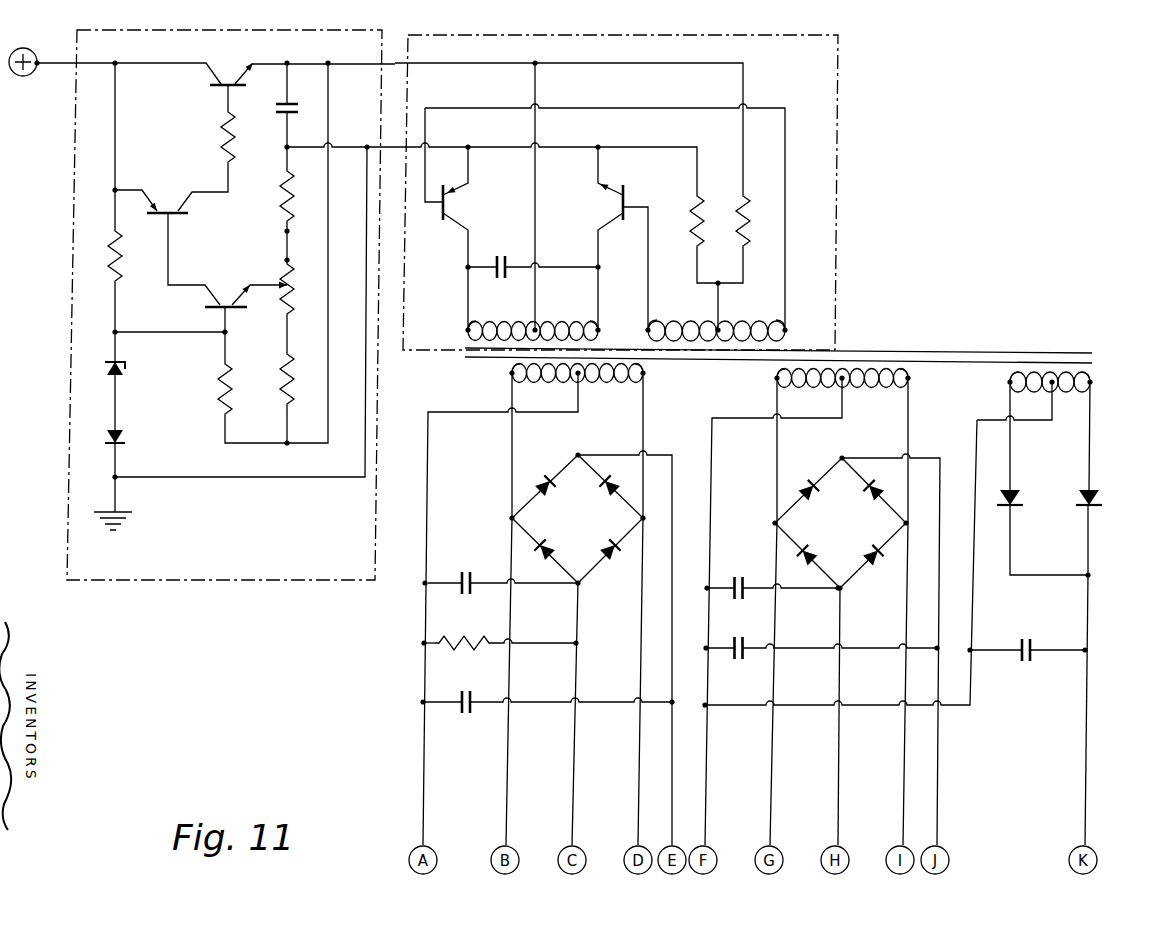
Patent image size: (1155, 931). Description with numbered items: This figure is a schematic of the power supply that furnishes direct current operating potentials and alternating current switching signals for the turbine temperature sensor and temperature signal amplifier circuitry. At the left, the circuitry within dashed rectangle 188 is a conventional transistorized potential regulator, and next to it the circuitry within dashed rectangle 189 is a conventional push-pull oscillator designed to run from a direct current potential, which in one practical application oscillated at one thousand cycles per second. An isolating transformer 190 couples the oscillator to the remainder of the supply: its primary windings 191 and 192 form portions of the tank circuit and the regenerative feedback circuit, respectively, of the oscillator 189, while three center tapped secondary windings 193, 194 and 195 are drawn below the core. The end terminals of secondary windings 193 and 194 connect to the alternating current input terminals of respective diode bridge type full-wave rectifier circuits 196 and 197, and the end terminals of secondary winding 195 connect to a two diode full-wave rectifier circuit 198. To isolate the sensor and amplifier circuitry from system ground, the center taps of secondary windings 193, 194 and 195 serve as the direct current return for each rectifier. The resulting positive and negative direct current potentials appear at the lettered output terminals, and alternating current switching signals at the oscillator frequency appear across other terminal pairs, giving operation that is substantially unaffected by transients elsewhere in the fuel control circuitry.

The dashed rectangle (transistorized potential regulator) 188 is at (75, 193).
The push-pull oscillator circuit 189 is at (840, 198).
The isolating transformer 190 is at (722, 360).
The primary winding 191 is at (552, 323).
The primary winding 192 is at (688, 322).
The center tapped secondary winding 193 is at (596, 385).
The center tapped secondary winding 194 is at (868, 390).
The center tapped secondary winding 195 is at (1070, 390).
The diode bridge type full-wave rectifier circuit 196 is at (562, 471).
The diode bridge type full-wave rectifier circuit 197 is at (816, 476).
The two diode full-wave rectifier circuit 198 is at (1095, 532).